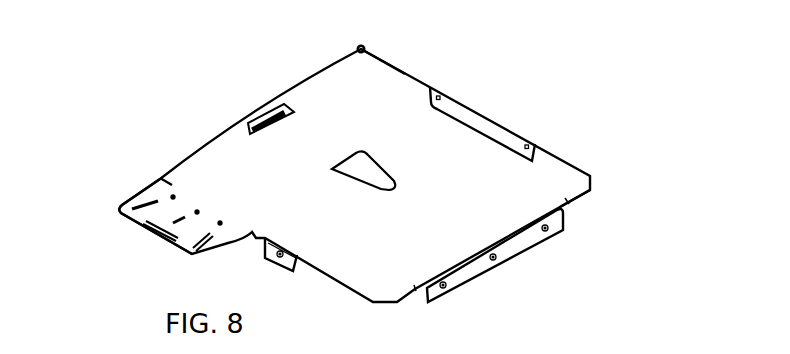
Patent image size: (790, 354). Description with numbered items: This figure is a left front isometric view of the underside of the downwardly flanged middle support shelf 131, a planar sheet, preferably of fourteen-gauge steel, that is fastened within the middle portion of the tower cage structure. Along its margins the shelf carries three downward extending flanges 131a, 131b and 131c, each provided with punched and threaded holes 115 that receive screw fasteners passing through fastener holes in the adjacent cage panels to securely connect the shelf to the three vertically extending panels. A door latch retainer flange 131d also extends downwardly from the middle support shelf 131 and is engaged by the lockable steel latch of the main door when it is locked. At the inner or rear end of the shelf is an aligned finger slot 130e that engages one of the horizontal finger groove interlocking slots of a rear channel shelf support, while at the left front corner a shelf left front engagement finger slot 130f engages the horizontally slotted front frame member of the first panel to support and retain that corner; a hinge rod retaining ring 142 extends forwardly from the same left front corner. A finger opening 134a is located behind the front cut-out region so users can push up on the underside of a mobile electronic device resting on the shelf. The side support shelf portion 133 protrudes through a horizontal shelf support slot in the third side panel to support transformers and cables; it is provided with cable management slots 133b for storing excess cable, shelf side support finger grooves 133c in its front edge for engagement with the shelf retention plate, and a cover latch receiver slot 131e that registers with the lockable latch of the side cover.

The middle support shelf 131 is at (582, 173).
The downward extending flange 131a is at (450, 117).
The downward extending flange 131b is at (483, 273).
The downward extending flange 131c is at (263, 256).
The door latch retainer flange 131d is at (252, 122).
The cover latch receiver slot 131e is at (144, 228).
The finger slot 130e is at (563, 201).
The shelf left front engagement finger slot 130f is at (372, 50).
The threaded holes 115 is at (447, 96).
The side support shelf portion 133 is at (172, 243).
The cable management slots 133b is at (140, 200).
The shelf side support finger grooves 133c is at (170, 182).
The finger opening 134a is at (341, 173).
The hinge rod retaining ring 142 is at (358, 45).